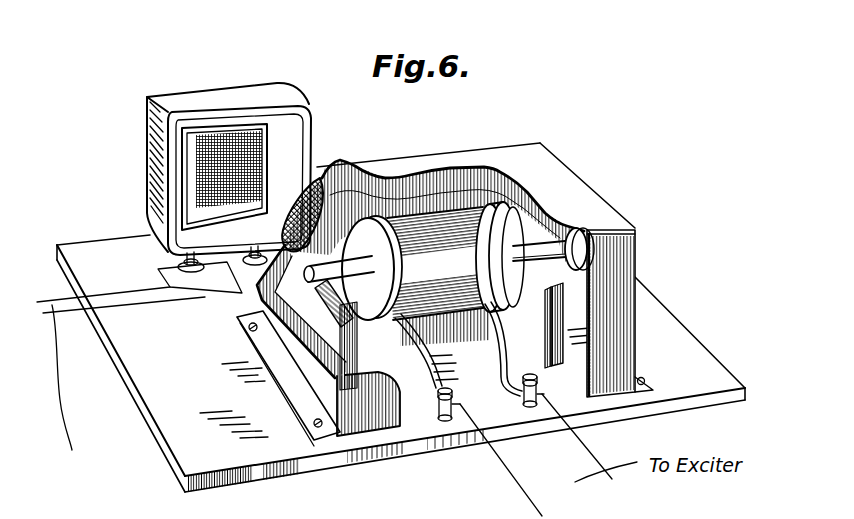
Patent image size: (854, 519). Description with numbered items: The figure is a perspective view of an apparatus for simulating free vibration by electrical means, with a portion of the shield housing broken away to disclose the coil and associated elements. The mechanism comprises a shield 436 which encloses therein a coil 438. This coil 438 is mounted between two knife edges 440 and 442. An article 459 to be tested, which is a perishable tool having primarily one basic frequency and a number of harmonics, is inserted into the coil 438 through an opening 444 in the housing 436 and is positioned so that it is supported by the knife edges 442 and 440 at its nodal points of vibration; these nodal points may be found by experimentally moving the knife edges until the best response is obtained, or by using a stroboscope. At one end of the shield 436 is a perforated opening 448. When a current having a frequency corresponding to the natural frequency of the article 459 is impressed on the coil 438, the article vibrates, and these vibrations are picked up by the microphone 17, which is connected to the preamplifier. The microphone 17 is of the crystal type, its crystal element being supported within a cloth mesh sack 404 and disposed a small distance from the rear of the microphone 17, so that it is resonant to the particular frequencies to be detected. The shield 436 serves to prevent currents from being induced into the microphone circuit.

The microphone 17 is at (231, 93).
The cloth mesh sack 404 is at (200, 175).
The shield 436 is at (543, 163).
The coil 438 is at (462, 253).
The knife edge 440 is at (547, 268).
The knife edge 442 is at (328, 298).
The opening 444 is at (567, 227).
The perforated opening 448 is at (305, 173).
The article 459 is at (590, 277).